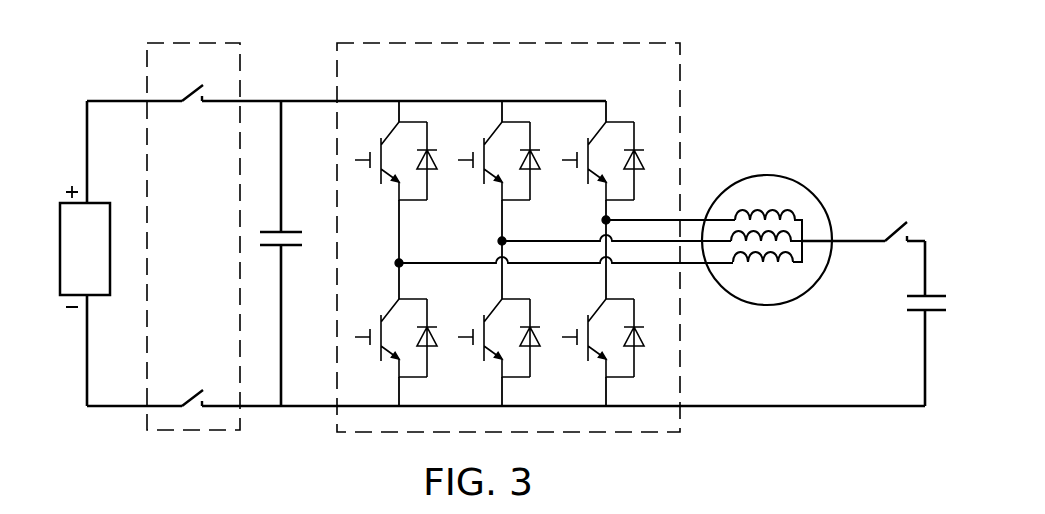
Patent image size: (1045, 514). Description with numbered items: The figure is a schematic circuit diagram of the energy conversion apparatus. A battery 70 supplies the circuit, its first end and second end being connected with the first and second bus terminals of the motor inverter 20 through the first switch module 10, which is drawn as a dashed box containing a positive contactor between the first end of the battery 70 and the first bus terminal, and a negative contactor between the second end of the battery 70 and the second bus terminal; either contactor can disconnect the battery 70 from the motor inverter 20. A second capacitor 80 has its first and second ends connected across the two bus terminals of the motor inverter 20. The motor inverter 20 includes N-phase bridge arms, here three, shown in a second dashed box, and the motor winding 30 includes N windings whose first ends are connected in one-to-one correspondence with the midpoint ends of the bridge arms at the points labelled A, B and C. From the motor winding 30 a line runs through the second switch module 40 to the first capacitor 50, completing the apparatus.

The first switch module 10 is at (190, 43).
The motor inverter 20 is at (447, 43).
The motor winding 30 is at (772, 175).
The second switch module 40 is at (900, 224).
The first capacitor 50 is at (915, 312).
The battery 70 is at (62, 203).
The second capacitor 80 is at (288, 247).